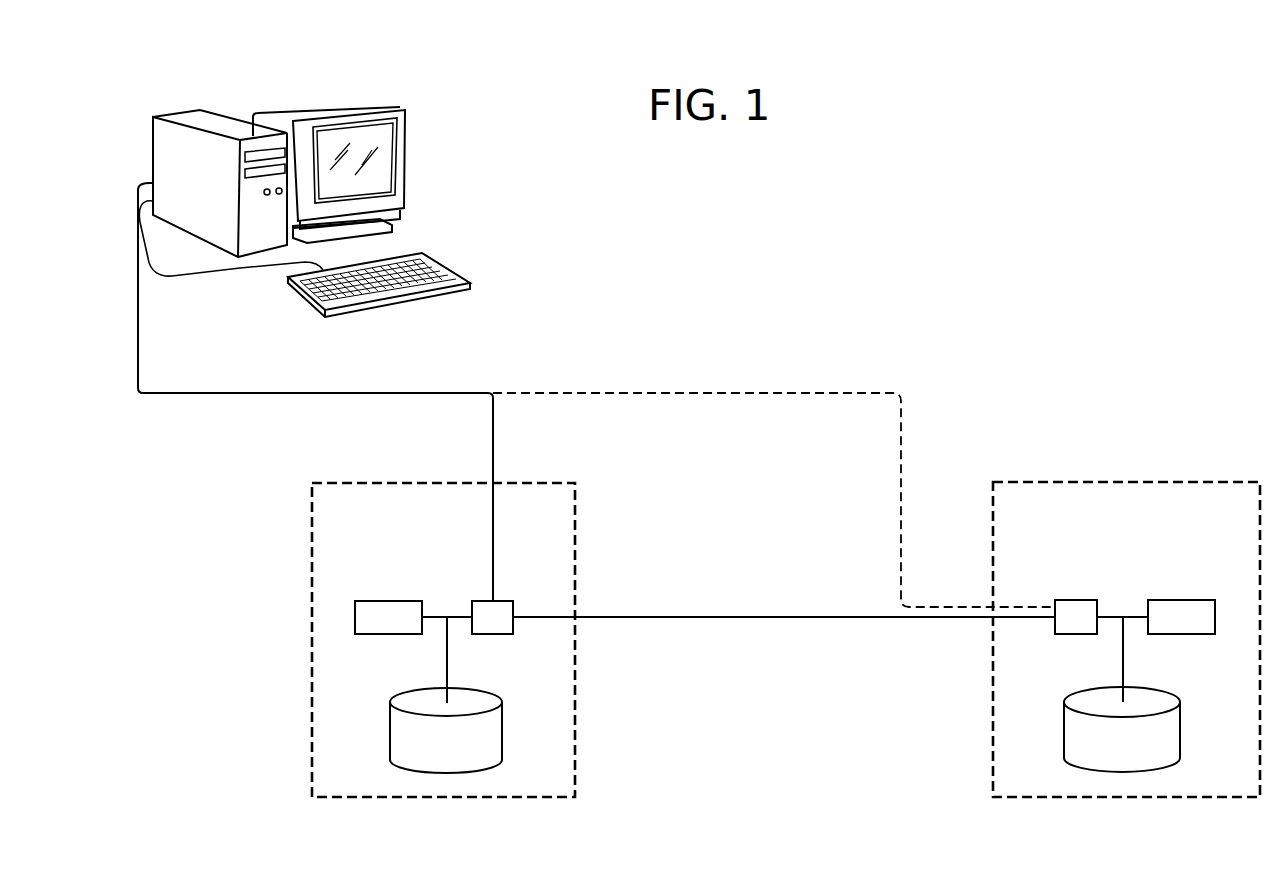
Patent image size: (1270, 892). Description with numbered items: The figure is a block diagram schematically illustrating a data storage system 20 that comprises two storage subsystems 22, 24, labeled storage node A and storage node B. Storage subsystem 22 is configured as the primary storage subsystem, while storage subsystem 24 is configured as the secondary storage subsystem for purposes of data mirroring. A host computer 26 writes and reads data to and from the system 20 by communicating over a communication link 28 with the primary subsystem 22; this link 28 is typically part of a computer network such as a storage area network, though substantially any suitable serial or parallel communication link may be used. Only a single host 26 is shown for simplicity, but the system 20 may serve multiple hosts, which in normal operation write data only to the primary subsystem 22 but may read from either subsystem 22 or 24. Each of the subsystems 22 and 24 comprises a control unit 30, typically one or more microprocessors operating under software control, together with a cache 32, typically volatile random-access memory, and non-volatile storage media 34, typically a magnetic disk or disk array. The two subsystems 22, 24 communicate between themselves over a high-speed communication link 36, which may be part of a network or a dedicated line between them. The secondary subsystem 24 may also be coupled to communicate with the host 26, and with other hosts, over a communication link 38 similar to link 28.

The data storage system 20 is at (1045, 225).
The storage subsystem 22 is at (370, 483).
The storage subsystem 24 is at (1200, 482).
The host computer 26 is at (180, 113).
The communication link 28 is at (228, 393).
The control unit 30 is at (490, 634).
The cache 32 is at (382, 634).
The non-volatile storage media 34 is at (390, 728).
The high-speed communication link 36 is at (676, 618).
The communication link 38 is at (572, 393).